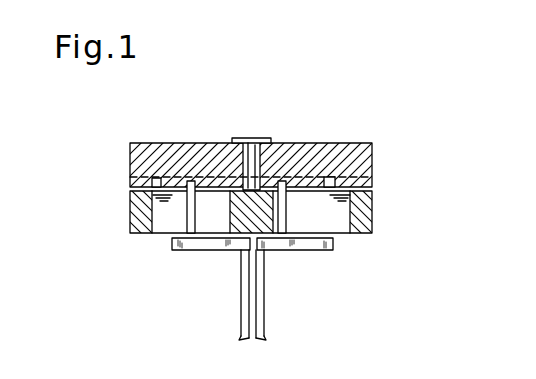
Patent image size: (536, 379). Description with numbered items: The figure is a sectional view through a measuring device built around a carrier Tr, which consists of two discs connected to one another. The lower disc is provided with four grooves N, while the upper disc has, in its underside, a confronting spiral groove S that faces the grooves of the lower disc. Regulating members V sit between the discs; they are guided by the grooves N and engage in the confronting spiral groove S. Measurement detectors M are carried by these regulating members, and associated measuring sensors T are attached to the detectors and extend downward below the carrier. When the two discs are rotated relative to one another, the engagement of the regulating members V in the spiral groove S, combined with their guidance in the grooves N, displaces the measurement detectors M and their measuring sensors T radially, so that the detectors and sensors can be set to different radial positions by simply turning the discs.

The spiral groove S is at (157, 174).
The grooves N is at (163, 212).
The carrier Tr is at (373, 203).
The regulating members V is at (187, 212).
The measurement detectors M is at (210, 244).
The measuring sensors T is at (242, 331).